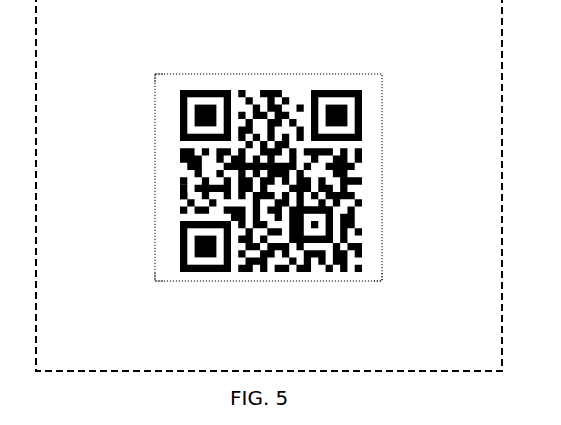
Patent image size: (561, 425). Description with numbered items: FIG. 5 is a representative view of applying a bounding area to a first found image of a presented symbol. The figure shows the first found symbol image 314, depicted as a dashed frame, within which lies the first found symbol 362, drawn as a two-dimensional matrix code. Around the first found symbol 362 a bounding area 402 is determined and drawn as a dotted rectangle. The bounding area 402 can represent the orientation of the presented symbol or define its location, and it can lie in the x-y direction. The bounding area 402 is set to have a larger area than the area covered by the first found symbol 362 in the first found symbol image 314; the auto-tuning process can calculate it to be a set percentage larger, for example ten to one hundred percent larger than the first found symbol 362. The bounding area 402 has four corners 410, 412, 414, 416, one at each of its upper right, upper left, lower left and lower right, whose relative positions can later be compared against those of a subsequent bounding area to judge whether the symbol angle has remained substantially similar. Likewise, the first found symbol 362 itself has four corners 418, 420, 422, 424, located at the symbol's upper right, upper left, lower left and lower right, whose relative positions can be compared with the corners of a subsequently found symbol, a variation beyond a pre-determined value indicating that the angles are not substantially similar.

The first found symbol image 314 is at (466, 0).
The first found symbol 362 is at (185, 192).
The bounding area 402 is at (277, 283).
The corner of bounding area 410 is at (382, 74).
The corner of bounding area 412 is at (155, 74).
The corner of bounding area 414 is at (155, 282).
The corner of bounding area 416 is at (382, 282).
The corner of first found symbol 418 is at (362, 92).
The corner of first found symbol 420 is at (182, 89).
The corner of first found symbol 422 is at (181, 274).
The corner of first found symbol 424 is at (359, 274).